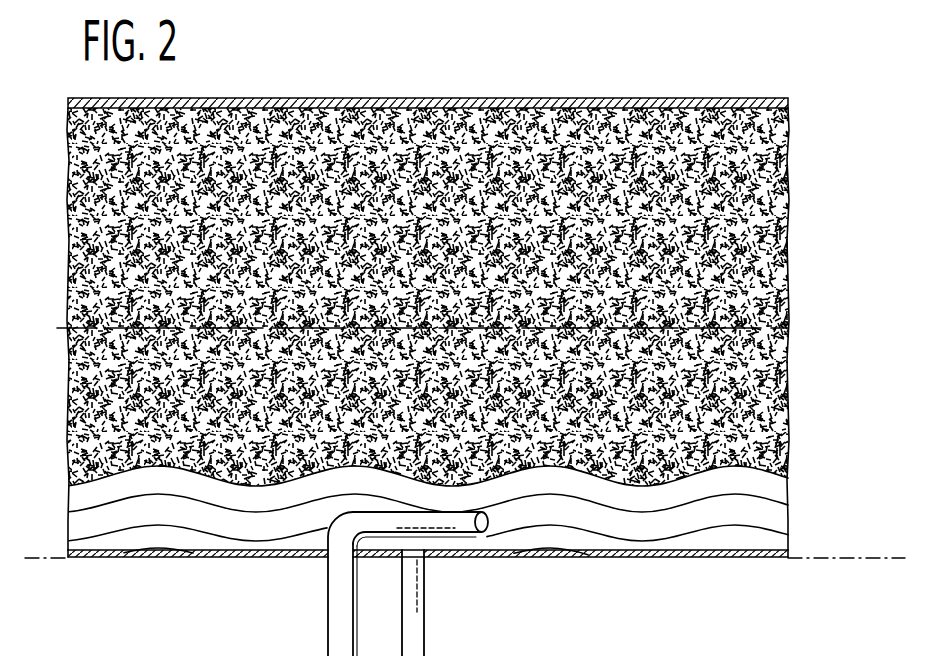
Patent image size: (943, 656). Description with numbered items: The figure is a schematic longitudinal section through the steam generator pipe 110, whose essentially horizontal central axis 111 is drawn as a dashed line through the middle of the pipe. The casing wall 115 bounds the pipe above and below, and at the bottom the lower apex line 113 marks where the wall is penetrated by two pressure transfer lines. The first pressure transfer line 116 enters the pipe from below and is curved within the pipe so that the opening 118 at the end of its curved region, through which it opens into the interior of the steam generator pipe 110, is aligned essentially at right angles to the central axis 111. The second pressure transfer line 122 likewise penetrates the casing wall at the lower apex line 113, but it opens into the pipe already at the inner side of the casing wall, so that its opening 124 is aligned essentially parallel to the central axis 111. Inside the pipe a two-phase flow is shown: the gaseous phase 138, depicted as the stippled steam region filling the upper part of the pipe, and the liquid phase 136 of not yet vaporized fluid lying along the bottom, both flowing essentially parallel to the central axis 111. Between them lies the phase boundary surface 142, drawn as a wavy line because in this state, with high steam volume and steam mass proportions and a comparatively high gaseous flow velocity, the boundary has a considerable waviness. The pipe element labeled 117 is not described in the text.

The steam generator pipe 110 is at (666, 97).
The central axis 111 is at (773, 330).
The lower apex line 113 is at (822, 558).
The casing wall 115 is at (596, 558).
The first pressure transfer line 116 is at (333, 603).
The injection pipe elbow 117 is at (382, 523).
The opening 118 is at (486, 525).
The second pressure transfer line 122 is at (422, 612).
The opening 124 is at (420, 562).
The liquid phase 136 is at (780, 493).
The gaseous phase 138 is at (772, 176).
The phase boundary surface 142 is at (777, 472).